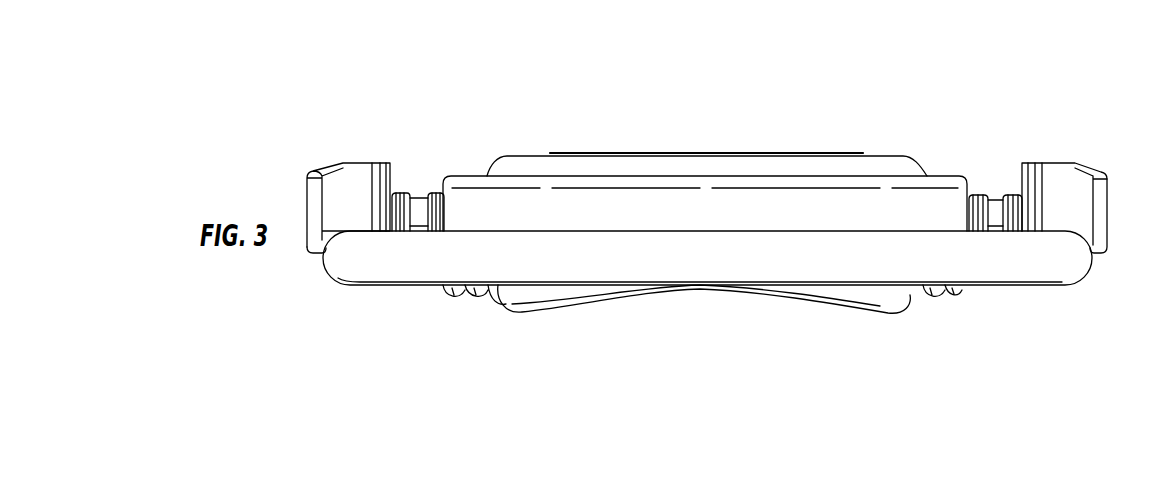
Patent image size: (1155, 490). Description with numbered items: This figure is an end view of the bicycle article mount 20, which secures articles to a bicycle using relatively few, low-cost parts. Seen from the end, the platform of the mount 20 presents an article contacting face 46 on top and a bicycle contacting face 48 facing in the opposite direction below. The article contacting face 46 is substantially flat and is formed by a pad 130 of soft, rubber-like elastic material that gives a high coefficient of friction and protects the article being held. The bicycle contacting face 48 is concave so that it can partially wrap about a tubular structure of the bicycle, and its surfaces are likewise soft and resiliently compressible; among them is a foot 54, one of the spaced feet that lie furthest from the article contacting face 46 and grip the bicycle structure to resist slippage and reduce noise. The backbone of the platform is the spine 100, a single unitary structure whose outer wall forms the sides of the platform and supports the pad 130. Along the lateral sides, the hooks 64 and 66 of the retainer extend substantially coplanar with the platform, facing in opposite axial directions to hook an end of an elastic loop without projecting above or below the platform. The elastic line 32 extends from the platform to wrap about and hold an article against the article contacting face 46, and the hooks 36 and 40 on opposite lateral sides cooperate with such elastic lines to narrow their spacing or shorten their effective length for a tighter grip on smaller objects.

The bicycle article mount 20 is at (825, 50).
The elastic line 32 is at (1010, 272).
The hook 36 is at (316, 168).
The hook 40 is at (1097, 170).
The article contacting face 46 is at (668, 152).
The bicycle contacting face 48 is at (888, 313).
The foot 54 is at (513, 313).
The hook 64 is at (421, 192).
The hook 66 is at (1003, 192).
The spine 100 is at (980, 194).
The pad 130 is at (886, 153).